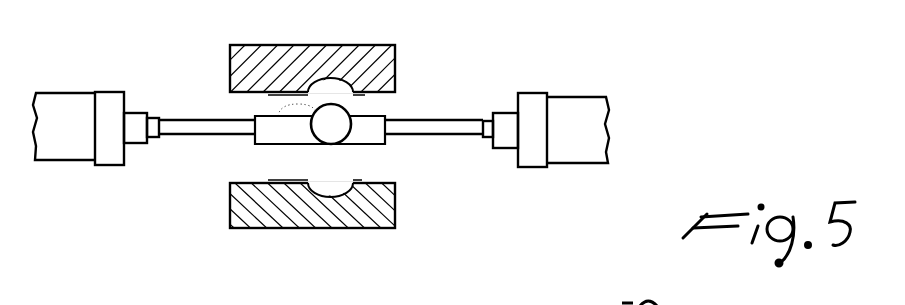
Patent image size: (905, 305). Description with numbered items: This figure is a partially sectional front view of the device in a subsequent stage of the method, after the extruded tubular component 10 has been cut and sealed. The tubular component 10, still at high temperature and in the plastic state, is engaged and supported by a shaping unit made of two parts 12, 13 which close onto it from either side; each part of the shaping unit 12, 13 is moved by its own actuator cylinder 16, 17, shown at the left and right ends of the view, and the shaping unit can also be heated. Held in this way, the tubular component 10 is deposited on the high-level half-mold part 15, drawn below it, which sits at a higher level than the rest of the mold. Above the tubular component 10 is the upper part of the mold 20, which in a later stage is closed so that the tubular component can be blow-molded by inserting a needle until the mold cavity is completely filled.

The tubular component 10 is at (338, 116).
The shaping unit part 12 is at (298, 127).
The shaping unit part 13 is at (360, 135).
The high-level half-mold part 15 is at (334, 187).
The actuator cylinder 16 is at (102, 102).
The actuator cylinder 17 is at (572, 110).
The upper part of the mold 20 is at (320, 52).